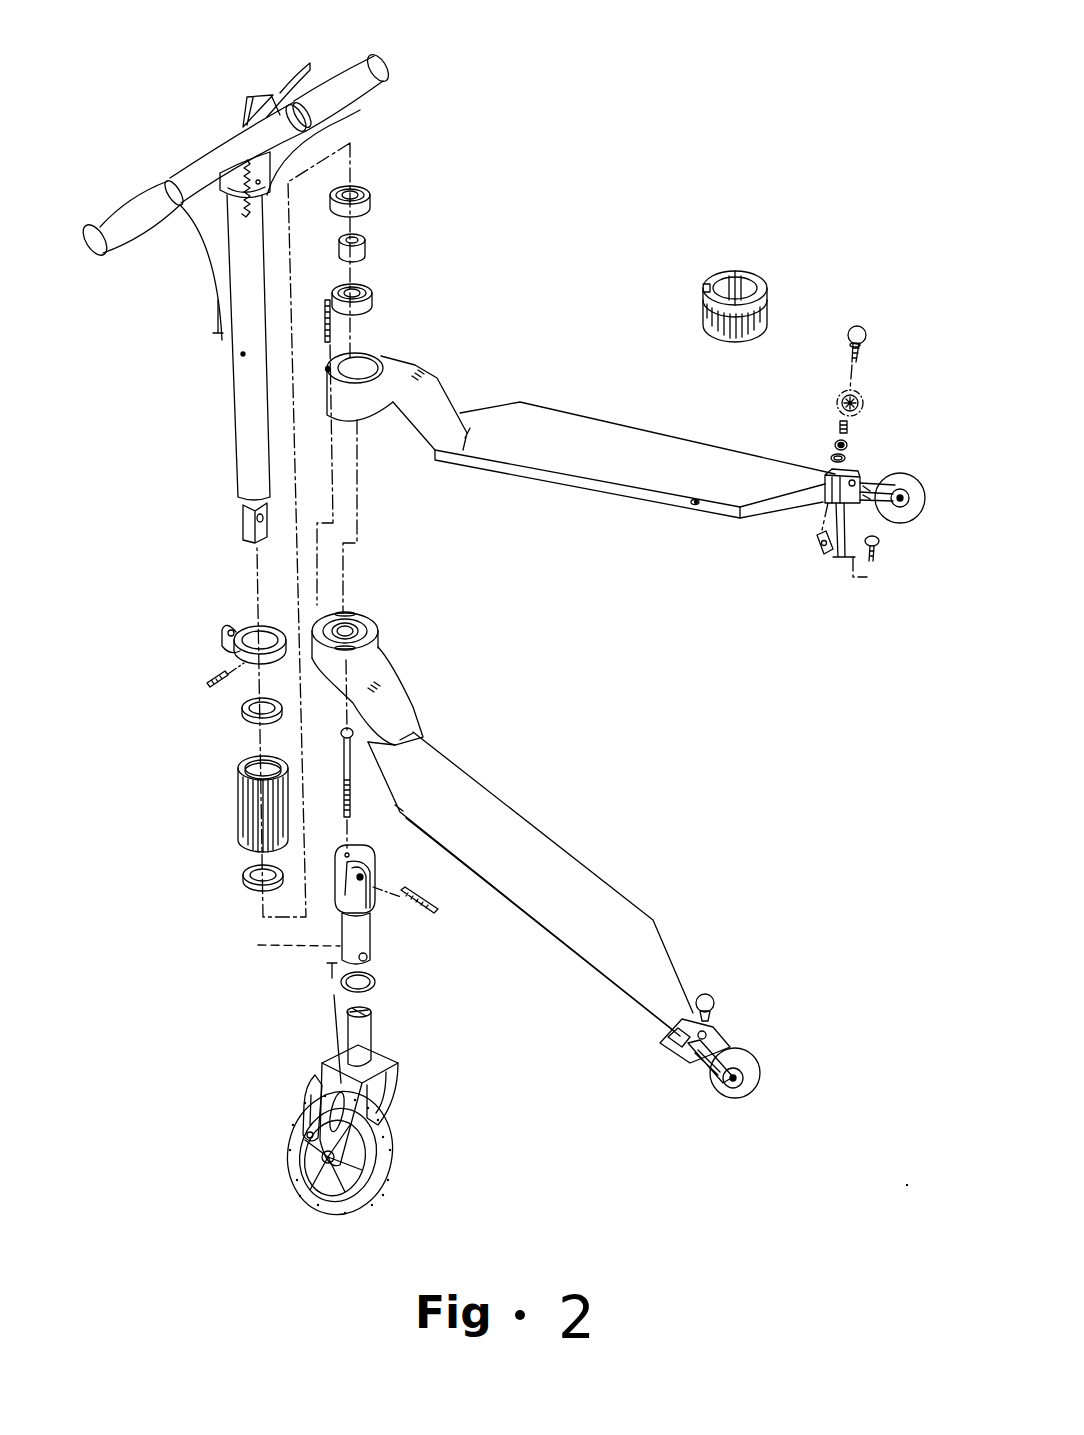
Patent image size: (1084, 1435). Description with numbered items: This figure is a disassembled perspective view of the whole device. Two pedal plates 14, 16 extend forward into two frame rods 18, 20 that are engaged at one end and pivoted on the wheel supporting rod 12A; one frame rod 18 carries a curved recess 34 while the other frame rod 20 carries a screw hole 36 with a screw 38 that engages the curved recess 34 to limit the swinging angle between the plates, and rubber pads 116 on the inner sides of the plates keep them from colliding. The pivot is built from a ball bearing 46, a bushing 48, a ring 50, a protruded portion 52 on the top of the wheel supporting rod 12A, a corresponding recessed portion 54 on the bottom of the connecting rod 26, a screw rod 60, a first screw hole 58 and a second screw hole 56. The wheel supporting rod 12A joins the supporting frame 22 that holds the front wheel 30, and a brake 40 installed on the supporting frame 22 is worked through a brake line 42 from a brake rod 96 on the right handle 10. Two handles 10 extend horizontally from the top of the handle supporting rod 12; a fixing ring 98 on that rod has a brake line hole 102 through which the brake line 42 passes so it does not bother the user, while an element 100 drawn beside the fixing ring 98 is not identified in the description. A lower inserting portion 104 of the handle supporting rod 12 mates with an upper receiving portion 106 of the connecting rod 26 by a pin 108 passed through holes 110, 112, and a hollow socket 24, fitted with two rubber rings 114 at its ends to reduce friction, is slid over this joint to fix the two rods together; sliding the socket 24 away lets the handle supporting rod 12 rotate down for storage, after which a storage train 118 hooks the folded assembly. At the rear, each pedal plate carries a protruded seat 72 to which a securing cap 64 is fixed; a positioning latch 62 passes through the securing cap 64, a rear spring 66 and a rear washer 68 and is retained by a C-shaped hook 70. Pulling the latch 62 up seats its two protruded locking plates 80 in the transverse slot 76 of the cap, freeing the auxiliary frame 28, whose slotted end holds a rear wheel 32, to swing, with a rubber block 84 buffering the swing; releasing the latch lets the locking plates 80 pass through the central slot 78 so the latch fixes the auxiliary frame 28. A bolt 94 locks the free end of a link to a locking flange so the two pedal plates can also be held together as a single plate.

The handle 10 is at (349, 81).
The brake rod 96 is at (292, 78).
The storage train 118 is at (354, 143).
The brake line 42 is at (219, 289).
The handle supporting rod 12 is at (247, 403).
The ball bearing 46 is at (380, 203).
The bushing 48 is at (367, 254).
The screw 38 is at (326, 326).
The screw hole 36 is at (327, 372).
The frame rod 20 is at (437, 393).
The pedal plate 16 is at (627, 477).
The rubber pad 116 is at (695, 505).
The securing cap 64 is at (767, 302).
The transverse slot 76 is at (706, 286).
The central slot 78 is at (735, 275).
The positioning latch 62 is at (856, 324).
The protruded locking plate 80 is at (863, 346).
The rear spring 66 is at (849, 428).
The rear washer 68 is at (836, 442).
The C-shaped hook 70 is at (830, 456).
The protruded seat 72 is at (829, 497).
The rear wheel 32 is at (907, 510).
The auxiliary frame 28 is at (876, 516).
The rubber block 84 is at (820, 556).
The bolt 94 is at (875, 548).
The hole 112 is at (244, 512).
The lower inserting portion 104 is at (247, 530).
The brake line hole 102 is at (224, 628).
The fixing ring 98 is at (232, 652).
The screw 100 is at (217, 676).
The rubber ring 114 is at (245, 718).
The hollow socket 24 is at (250, 802).
The curved recess 34 is at (334, 610).
The frame rod 18 is at (391, 697).
The screw rod 60 is at (346, 752).
The upper receiving portion 106 is at (362, 856).
The hole 110 is at (365, 878).
The pin 108 is at (427, 905).
The connecting rod 26 is at (358, 931).
The first screw hole 58 is at (281, 949).
The recessed portion 54 is at (368, 958).
The ring 50 is at (376, 982).
The protruded portion 52 is at (347, 1015).
The second screw hole 56 is at (370, 1011).
The wheel supporting rod 12A is at (368, 1042).
The brake 40 is at (313, 1083).
The supporting frame 22 is at (386, 1093).
The front wheel 30 is at (386, 1158).
The pedal plate 14 is at (552, 852).